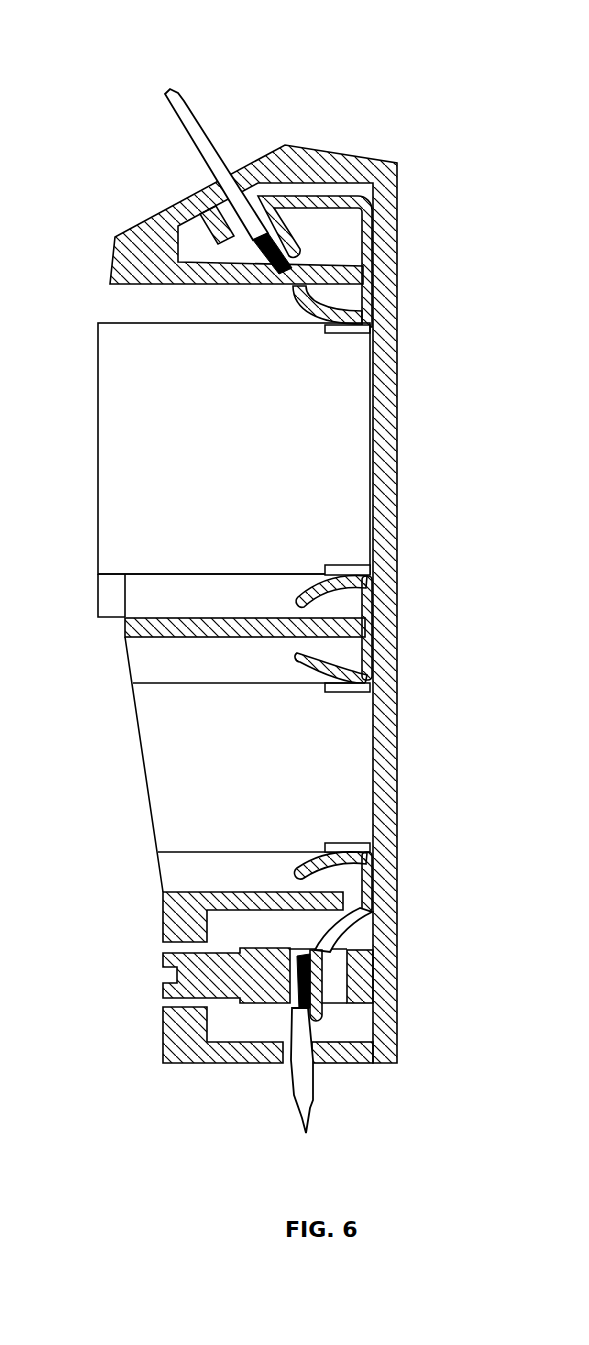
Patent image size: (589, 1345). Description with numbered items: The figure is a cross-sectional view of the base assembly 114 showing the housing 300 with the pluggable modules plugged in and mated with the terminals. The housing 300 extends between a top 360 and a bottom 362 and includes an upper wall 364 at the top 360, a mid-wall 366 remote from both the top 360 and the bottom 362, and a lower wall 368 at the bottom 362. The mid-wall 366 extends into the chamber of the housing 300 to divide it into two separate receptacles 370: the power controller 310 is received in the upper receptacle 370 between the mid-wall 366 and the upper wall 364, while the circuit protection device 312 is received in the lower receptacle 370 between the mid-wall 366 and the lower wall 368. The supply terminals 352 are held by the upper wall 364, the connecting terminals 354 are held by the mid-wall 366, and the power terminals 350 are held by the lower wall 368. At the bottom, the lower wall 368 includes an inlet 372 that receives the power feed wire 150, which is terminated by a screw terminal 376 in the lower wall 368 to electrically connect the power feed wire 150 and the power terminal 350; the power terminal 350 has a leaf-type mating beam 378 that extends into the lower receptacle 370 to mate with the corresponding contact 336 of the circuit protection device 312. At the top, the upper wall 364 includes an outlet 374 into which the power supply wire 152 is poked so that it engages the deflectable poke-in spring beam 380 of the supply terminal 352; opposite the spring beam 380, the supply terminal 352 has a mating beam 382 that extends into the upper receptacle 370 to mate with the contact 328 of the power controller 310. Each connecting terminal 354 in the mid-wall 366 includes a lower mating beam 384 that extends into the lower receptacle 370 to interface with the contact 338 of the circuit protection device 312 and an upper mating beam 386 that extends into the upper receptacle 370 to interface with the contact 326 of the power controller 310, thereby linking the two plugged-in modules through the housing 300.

The base assembly 114 is at (329, 61).
The power feed wire 150 is at (325, 1079).
The power supply wire 152 is at (206, 116).
The housing 300 is at (368, 141).
The power controller 310 is at (123, 478).
The circuit protection device 312 is at (147, 742).
The contact 326 is at (343, 566).
The contact 328 is at (357, 334).
The contact 336 is at (352, 843).
The contact 338 is at (347, 692).
The power terminal 350 is at (366, 912).
The supply terminal 352 is at (366, 250).
The connecting terminal 354 is at (366, 608).
The top 360 is at (325, 150).
The bottom 362 is at (207, 1062).
The upper wall 364 is at (177, 272).
The mid-wall 366 is at (125, 625).
The lower wall 368 is at (240, 912).
The receptacle 370 is at (388, 412).
The inlet 372 is at (284, 1073).
The outlet 374 is at (233, 169).
The screw terminal 376 is at (240, 980).
The mating beam 378 is at (328, 857).
The spring beam 380 is at (305, 234).
The mating beam 382 is at (337, 308).
The lower mating beam 384 is at (358, 582).
The upper mating beam 386 is at (343, 670).